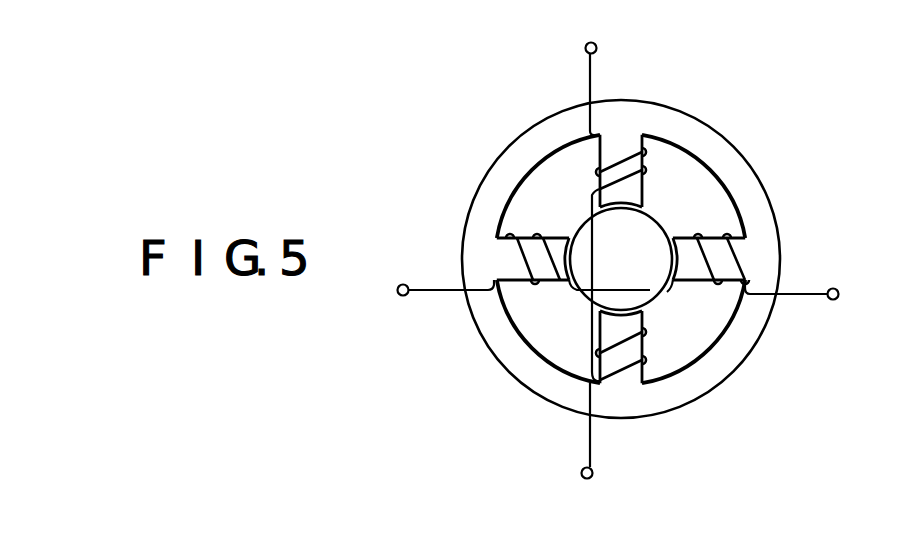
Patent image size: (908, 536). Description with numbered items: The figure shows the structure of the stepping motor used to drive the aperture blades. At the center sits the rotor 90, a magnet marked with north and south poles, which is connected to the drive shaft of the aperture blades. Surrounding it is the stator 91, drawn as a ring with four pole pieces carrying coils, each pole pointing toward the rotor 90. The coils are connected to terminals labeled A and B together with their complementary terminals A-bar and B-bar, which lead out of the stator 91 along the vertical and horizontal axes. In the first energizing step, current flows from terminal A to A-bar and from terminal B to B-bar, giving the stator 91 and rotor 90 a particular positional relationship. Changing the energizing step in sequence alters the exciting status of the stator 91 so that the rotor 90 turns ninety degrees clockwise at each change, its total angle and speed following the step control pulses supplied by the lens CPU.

The rotor 90 is at (650, 233).
The stator 91 is at (740, 168).
The phase A winding terminal A is at (614, 263).
The phase B winding terminal B is at (618, 271).